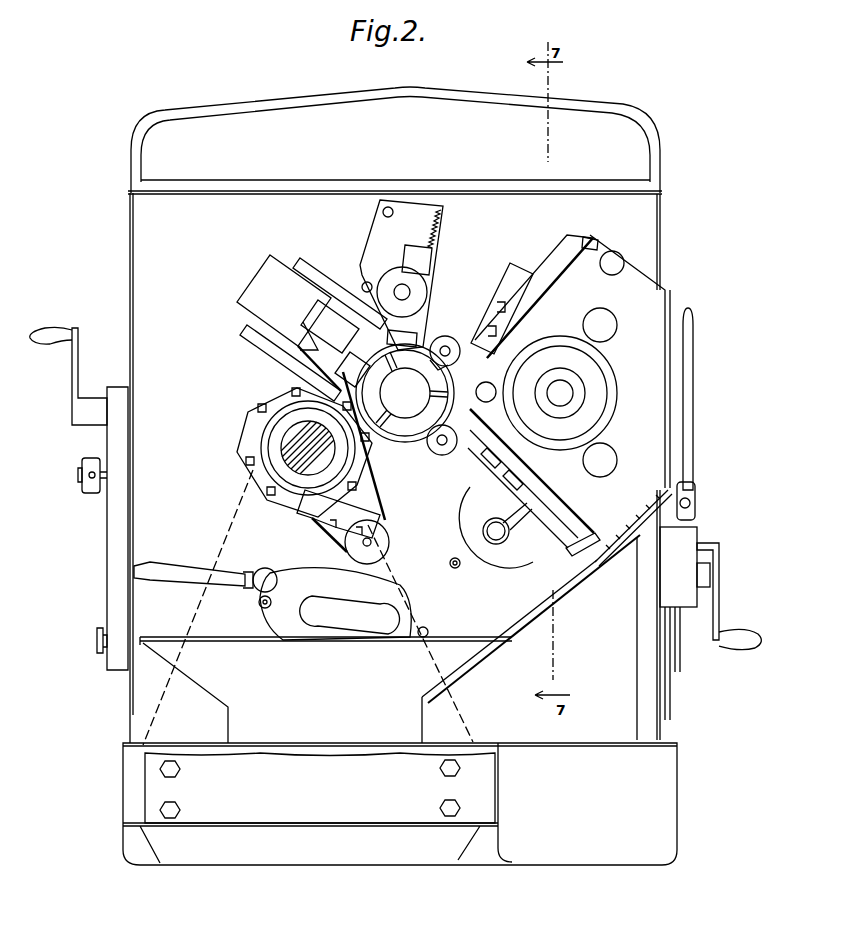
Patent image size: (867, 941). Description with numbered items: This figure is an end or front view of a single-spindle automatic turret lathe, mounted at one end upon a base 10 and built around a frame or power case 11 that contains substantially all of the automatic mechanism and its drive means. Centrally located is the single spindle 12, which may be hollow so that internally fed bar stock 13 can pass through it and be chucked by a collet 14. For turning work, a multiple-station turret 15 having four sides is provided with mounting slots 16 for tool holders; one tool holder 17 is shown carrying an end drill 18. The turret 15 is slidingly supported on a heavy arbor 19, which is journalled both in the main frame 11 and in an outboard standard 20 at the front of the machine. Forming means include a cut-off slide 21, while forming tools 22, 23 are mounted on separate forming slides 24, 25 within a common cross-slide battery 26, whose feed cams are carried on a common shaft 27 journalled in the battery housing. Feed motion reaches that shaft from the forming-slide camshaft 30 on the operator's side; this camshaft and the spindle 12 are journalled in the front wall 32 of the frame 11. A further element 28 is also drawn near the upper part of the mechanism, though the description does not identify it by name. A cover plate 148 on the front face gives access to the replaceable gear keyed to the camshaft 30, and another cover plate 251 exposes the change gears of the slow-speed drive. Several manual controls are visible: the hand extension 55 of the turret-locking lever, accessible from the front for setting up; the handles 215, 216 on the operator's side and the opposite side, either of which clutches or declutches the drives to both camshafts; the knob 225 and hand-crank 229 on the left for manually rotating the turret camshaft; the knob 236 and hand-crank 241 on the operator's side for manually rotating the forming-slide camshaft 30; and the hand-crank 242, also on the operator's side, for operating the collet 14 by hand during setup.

The base 10 is at (665, 796).
The frame or power case 11 is at (650, 238).
The spindle 12 is at (396, 441).
The bar stock 13 is at (400, 388).
The collet 14 is at (410, 430).
The multiple-station turret 15 is at (245, 432).
The slots 16 is at (296, 390).
The tool holder 17 is at (355, 549).
The end drill 18 is at (372, 542).
The arbor or stem 19 is at (272, 465).
The end or outboard standard 20 is at (456, 706).
The cut-off slide 21 is at (270, 277).
The forming tool 22 is at (445, 340).
The forming tool 23 is at (441, 456).
The forming slide 24 is at (555, 263).
The forming slide 25 is at (552, 506).
The cross-slide battery 26 is at (658, 300).
The common shaft 27 is at (560, 400).
The rack plate 28 is at (428, 262).
The forming-slide camshaft 30 is at (497, 542).
The front wall 32 is at (136, 237).
The hand extension 55 is at (194, 570).
The cover plate 148 is at (472, 566).
The handle 215 is at (694, 511).
The handle 216 is at (90, 490).
The knob 225 is at (97, 638).
The hand-crank 229 is at (72, 378).
The knob 236 is at (708, 571).
The hand-crank 241 is at (718, 600).
The hand-crank 242 is at (692, 389).
The cover plate 251 is at (300, 576).